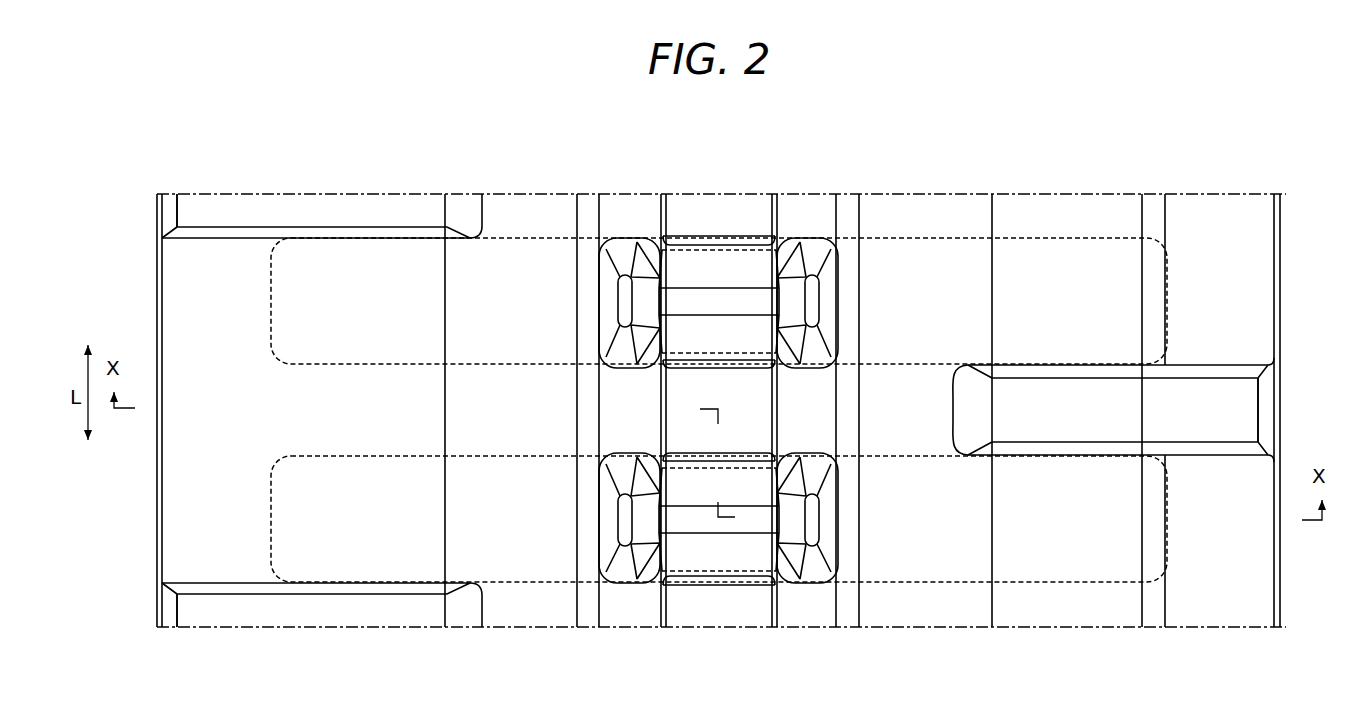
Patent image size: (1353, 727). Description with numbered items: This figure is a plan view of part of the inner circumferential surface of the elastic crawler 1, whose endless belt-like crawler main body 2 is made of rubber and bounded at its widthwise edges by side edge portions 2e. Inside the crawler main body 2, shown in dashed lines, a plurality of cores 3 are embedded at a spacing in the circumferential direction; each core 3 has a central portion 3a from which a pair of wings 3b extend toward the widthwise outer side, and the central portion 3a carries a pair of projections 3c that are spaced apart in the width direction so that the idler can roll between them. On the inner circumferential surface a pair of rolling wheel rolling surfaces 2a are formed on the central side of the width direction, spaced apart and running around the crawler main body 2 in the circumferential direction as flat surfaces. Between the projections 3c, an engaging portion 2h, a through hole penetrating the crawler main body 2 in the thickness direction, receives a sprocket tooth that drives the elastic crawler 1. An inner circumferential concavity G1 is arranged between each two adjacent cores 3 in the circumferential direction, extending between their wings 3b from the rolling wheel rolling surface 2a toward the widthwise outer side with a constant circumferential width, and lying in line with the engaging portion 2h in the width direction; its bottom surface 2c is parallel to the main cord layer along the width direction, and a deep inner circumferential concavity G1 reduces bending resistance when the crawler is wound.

The elastic crawler 1 is at (234, 131).
The crawler main body 2 is at (1229, 224).
The rolling wheel rolling surface 2a is at (521, 211).
The bottom surface 2c is at (338, 212).
The side wall of case 2e is at (157, 298).
The engaging portion 2h is at (714, 221).
The core 3 is at (1028, 239).
The central portion 3a is at (746, 247).
The wing 3b is at (1152, 239).
The projection 3c is at (610, 303).
The inner circumferential concavity G1 is at (1211, 480).